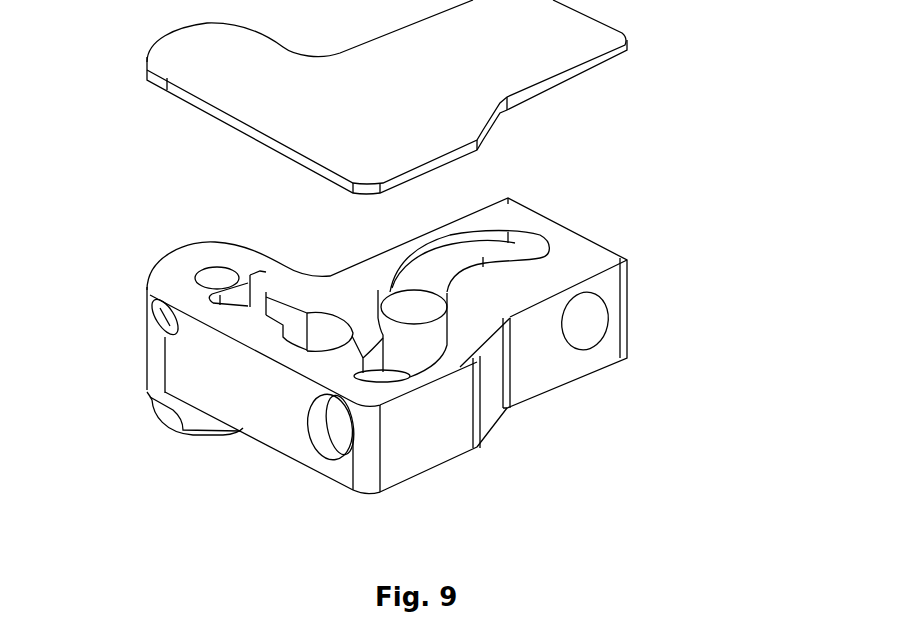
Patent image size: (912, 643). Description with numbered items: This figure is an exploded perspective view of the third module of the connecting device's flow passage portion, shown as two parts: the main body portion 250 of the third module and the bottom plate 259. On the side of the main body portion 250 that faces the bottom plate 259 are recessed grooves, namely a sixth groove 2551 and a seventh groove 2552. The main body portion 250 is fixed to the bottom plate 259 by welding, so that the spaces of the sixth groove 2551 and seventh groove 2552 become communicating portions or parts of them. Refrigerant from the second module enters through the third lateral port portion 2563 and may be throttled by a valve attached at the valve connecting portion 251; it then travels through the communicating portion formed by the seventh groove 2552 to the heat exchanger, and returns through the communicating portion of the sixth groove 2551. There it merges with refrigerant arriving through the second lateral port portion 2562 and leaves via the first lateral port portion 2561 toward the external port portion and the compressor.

The bottom plate 259 is at (521, 93).
The main body portion of the third module 250 is at (553, 222).
The sixth groove 2551 is at (477, 258).
The seventh groove 2552 is at (262, 297).
The first lateral port portion 2561 is at (588, 322).
The second lateral port portion 2562 is at (330, 422).
The third lateral port portion 2563 is at (147, 287).
The valve connecting portion 251 is at (180, 418).